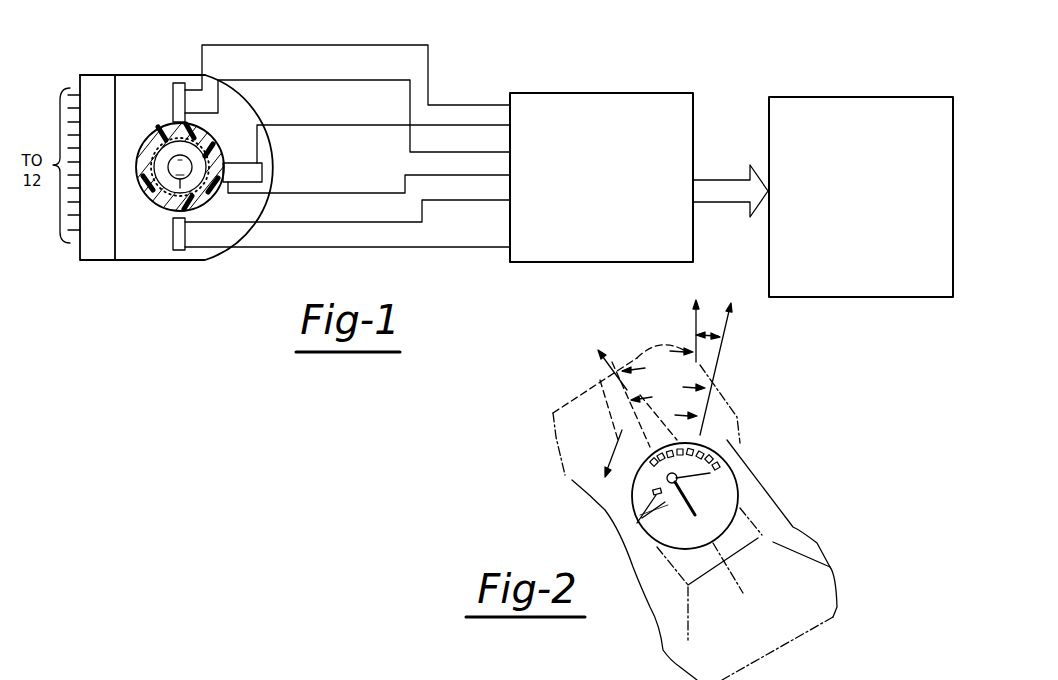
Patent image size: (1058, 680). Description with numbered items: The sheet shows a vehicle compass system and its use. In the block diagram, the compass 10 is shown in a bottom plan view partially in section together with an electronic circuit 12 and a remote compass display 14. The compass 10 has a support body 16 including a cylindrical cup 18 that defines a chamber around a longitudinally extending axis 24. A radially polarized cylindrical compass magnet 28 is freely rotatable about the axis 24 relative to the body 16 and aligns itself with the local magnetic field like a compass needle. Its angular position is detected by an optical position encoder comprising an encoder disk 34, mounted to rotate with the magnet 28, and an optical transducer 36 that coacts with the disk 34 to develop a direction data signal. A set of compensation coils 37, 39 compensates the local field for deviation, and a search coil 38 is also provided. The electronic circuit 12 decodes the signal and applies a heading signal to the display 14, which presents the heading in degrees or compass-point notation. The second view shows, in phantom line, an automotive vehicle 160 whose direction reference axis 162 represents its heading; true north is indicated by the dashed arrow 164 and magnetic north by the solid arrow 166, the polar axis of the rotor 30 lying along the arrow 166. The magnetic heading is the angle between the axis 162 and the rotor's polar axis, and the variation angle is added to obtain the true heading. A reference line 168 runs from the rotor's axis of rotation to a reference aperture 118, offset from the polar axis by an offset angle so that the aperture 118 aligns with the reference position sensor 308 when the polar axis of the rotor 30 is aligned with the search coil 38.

In FIG. 1, the compass 10 is at (178, 56).
In FIG. 2, the compass 10 is at (749, 474).
In FIG. 1, the electronic circuit 12 is at (588, 92).
In FIG. 1, the compass display 14 is at (866, 96).
In FIG. 1, the support body 16 is at (156, 268).
In FIG. 1, the cylindrical cup 18 is at (223, 132).
In FIG. 1, the longitudinal axis 24 is at (167, 173).
In FIG. 1, the compass magnet 28 is at (163, 140).
In FIG. 1, the encoder disk 34 is at (177, 190).
In FIG. 1, the optical transducer 36 is at (97, 246).
In FIG. 1, the compensation coil 37 is at (270, 170).
In FIG. 1, the search coil 38 is at (173, 93).
In FIG. 1, the compensation coil 39 is at (187, 232).
In FIG. 2, the rotor 30 is at (614, 496).
In FIG. 2, the reference aperture 118 is at (640, 533).
In FIG. 2, the automotive vehicle 160 is at (747, 412).
In FIG. 2, the direction reference axis 162 is at (625, 405).
In FIG. 2, the true north direction arrow 164 is at (695, 325).
In FIG. 2, the magnetic north direction arrow 166 is at (723, 355).
In FIG. 2, the reference line 168 is at (596, 480).
In FIG. 2, the reference position sensor 308 is at (682, 483).